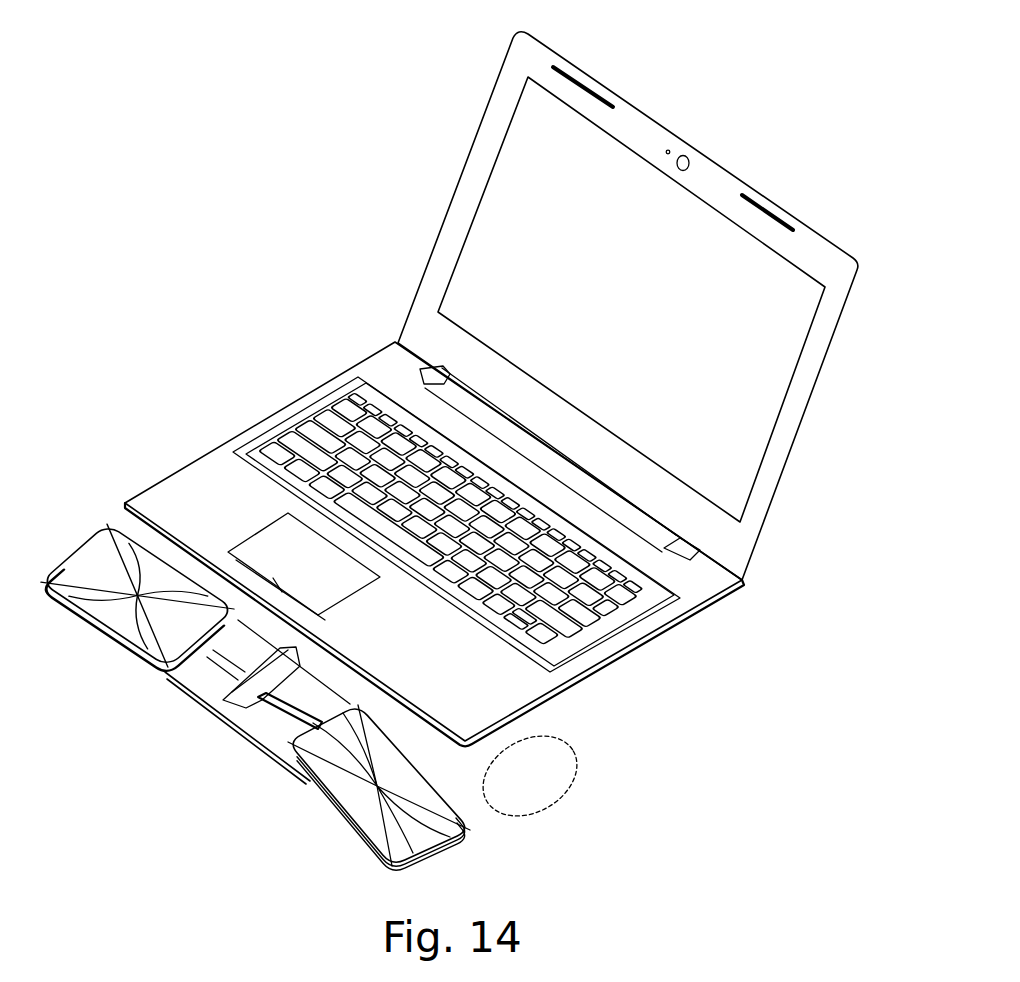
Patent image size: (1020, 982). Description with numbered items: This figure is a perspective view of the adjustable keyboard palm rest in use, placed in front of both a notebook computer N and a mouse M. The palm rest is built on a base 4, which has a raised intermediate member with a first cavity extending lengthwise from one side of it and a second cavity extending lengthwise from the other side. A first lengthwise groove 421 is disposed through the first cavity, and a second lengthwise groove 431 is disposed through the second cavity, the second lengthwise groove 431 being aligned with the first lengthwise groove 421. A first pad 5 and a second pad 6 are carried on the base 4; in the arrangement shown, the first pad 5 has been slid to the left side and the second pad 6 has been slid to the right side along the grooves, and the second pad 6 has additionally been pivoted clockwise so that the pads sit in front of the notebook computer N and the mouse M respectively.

The notebook computer N is at (378, 365).
The base 4 is at (243, 720).
The first lengthwise groove 421 is at (210, 667).
The second lengthwise groove 431 is at (285, 712).
The first pad 5 is at (88, 600).
The second pad 6 is at (353, 812).
The mouse M is at (541, 768).